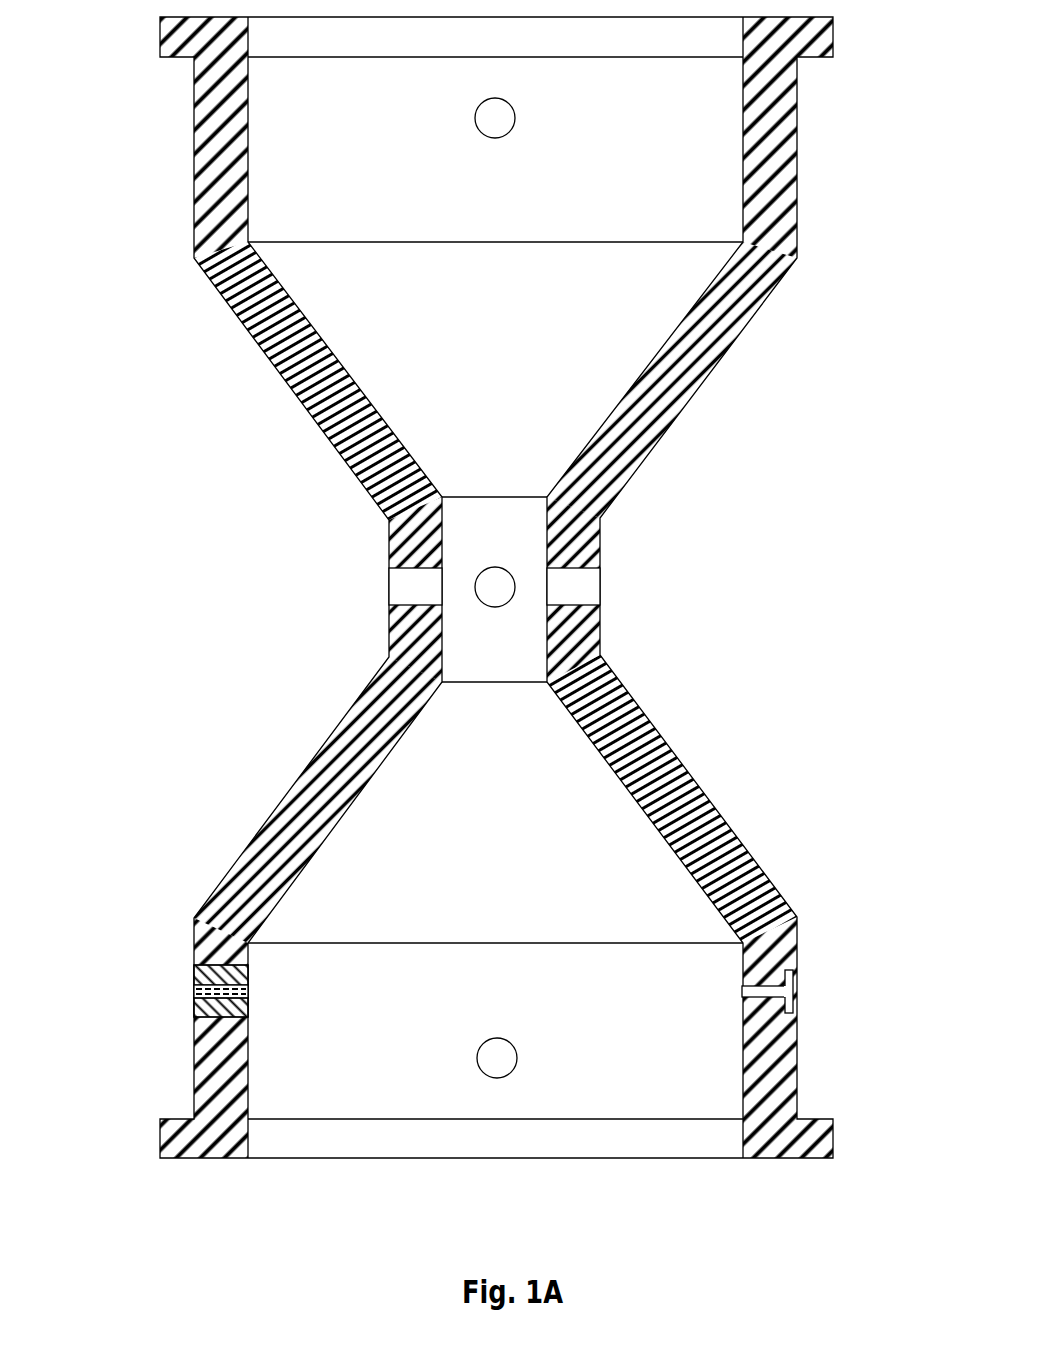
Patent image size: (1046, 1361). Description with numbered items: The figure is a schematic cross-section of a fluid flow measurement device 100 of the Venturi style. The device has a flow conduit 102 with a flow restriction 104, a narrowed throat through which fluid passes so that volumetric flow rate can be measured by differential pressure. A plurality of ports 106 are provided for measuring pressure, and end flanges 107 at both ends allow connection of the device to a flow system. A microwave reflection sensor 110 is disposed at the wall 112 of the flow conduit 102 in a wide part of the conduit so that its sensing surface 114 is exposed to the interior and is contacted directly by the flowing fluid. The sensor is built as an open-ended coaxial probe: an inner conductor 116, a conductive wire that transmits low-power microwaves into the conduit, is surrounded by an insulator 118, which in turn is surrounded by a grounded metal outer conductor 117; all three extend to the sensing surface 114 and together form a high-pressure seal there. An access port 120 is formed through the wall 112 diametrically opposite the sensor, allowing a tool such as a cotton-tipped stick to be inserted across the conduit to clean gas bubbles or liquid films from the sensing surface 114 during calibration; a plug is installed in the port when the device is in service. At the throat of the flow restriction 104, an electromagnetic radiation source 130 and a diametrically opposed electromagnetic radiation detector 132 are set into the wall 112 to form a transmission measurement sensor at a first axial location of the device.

The fluid flow measurement device 100 is at (765, 473).
The flow conduit 102 is at (522, 309).
The flow restriction 104 is at (389, 540).
The ports 106 is at (483, 132).
The end flanges 107 is at (165, 57).
The microwave reflection sensor 110 is at (171, 966).
The wall 112 is at (208, 907).
The sensing surface 114 is at (203, 1016).
The inner conductor 116 is at (194, 993).
The outer conductor 117 is at (194, 979).
The insulator 118 is at (250, 988).
The access port 120 is at (736, 1001).
The electromagnetic radiation source 130 is at (389, 600).
The electromagnetic radiation detector 132 is at (602, 583).